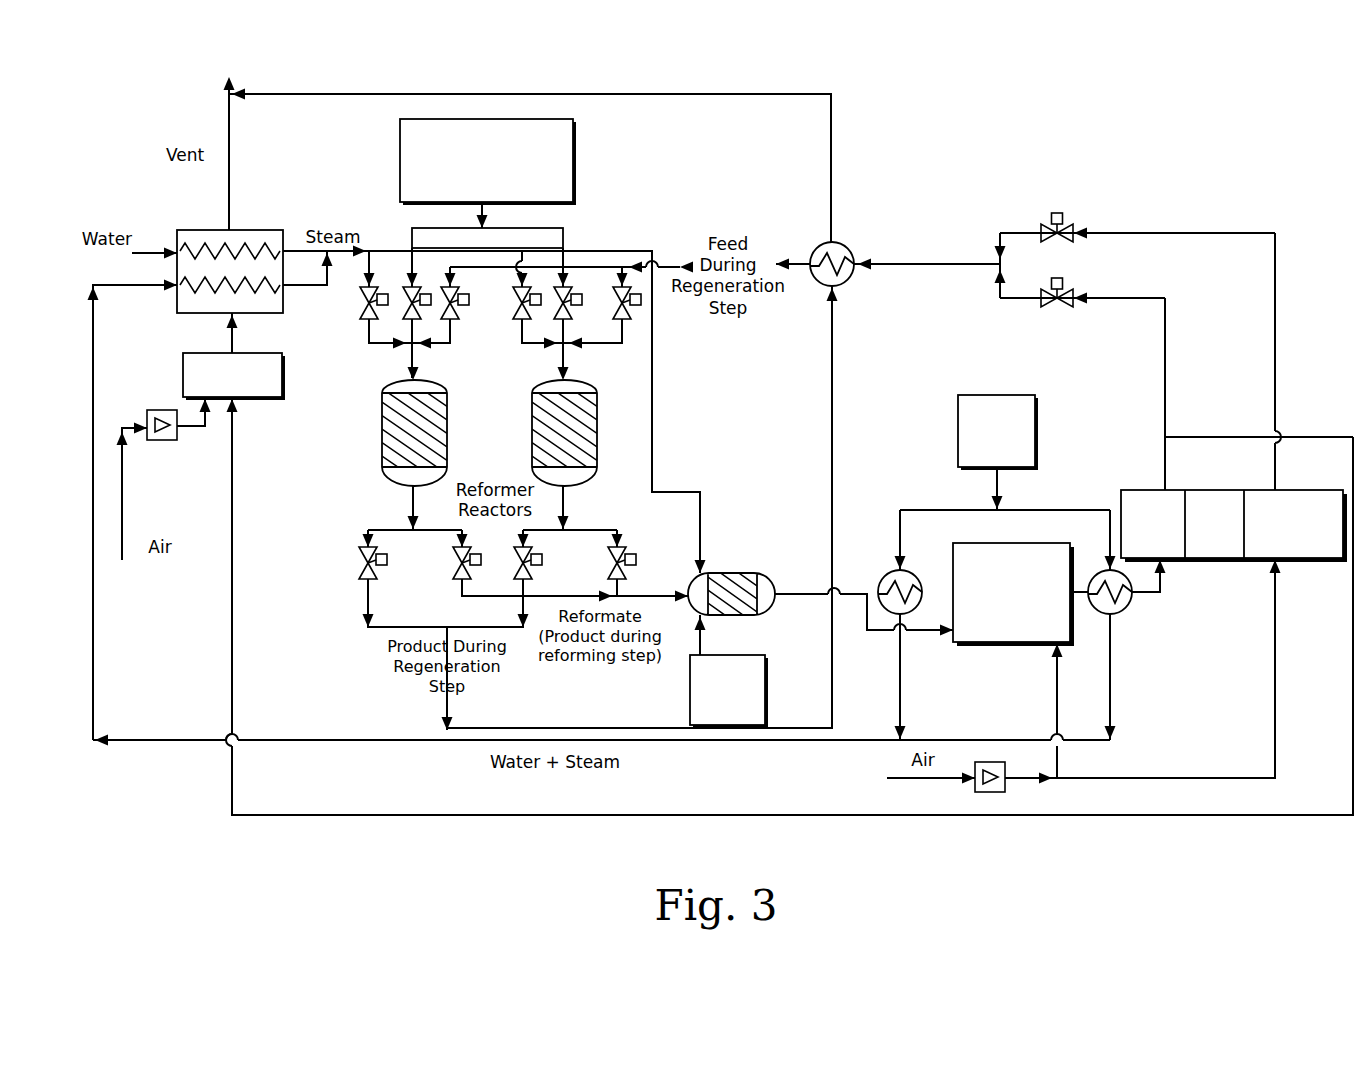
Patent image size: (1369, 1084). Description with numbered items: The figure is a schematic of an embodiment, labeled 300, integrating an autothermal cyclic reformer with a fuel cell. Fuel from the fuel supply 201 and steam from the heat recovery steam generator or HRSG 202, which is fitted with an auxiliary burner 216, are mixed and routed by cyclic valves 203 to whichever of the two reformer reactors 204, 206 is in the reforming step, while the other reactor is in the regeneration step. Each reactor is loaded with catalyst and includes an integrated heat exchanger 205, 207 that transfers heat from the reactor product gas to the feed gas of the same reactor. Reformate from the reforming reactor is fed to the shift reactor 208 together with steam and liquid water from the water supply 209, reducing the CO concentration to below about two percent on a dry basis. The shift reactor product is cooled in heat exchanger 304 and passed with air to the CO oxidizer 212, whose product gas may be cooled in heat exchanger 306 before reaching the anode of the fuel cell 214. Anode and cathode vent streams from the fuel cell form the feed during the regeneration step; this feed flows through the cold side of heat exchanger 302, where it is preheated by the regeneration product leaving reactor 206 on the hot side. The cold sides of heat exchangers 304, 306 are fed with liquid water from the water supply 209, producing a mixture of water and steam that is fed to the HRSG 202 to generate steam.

The fuel supply 201 is at (573, 150).
The heat recovery steam generator (HRSG) 202 is at (187, 230).
The cyclic valves 203 is at (832, 115).
The reformer reactor 204 is at (443, 424).
The heat exchanger 205 is at (438, 438).
The reformer reactor 206 is at (589, 424).
The heat exchanger 207 is at (578, 435).
The shift reactor 208 is at (693, 578).
The water supply 209 is at (765, 667).
The CO oxidizer 212 is at (1047, 543).
The fuel cell 214 is at (1318, 490).
The auxiliary burner 216 is at (183, 368).
The fuel cell system 300 is at (1045, 109).
The heat exchanger 302 is at (853, 250).
The heat exchanger 304 is at (885, 576).
The heat exchanger 306 is at (1128, 607).